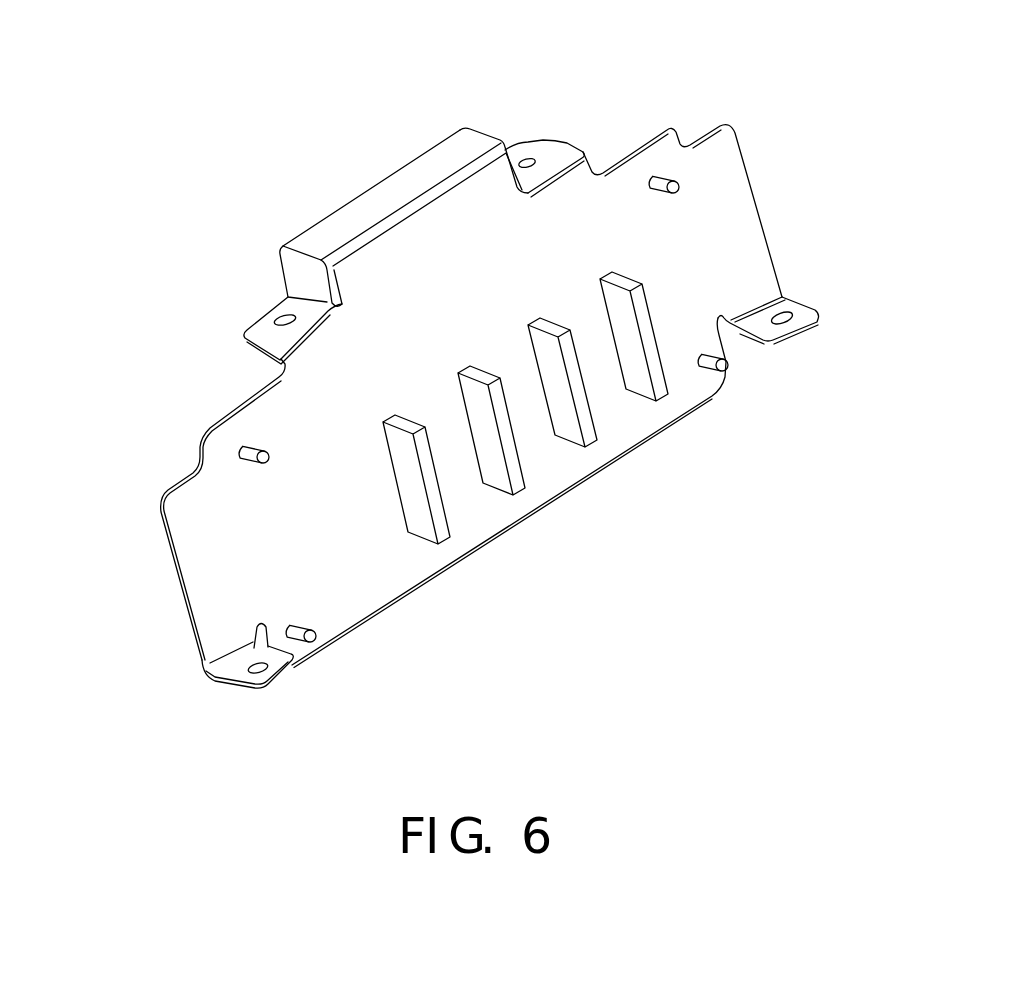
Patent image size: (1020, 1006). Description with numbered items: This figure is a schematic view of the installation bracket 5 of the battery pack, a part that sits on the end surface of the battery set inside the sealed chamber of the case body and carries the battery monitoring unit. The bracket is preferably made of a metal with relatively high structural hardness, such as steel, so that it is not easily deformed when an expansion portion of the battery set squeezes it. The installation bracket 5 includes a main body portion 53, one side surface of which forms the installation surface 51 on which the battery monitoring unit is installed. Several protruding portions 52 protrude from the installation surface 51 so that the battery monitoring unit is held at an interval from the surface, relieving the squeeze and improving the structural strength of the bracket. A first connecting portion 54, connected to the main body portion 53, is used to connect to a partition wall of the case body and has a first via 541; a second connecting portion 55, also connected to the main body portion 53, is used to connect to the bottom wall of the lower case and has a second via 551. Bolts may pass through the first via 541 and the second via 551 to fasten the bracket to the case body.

The installation bracket 5 is at (330, 103).
The installation surface 51 is at (363, 575).
The protruding portion 52 is at (513, 465).
The main body portion 53 is at (202, 562).
The first connecting portion 54 is at (541, 148).
The first via 541 is at (270, 308).
The second connecting portion 55 is at (800, 312).
The second via 551 is at (275, 683).